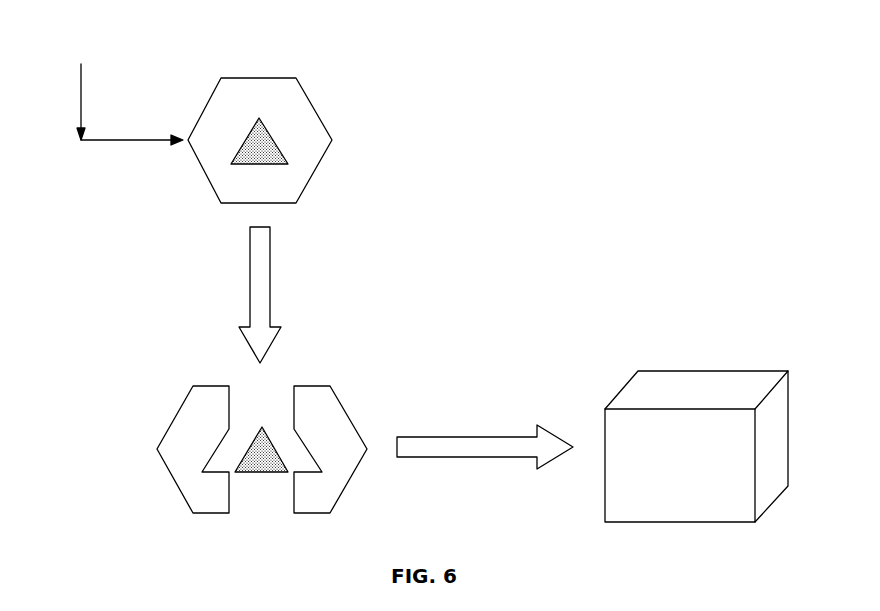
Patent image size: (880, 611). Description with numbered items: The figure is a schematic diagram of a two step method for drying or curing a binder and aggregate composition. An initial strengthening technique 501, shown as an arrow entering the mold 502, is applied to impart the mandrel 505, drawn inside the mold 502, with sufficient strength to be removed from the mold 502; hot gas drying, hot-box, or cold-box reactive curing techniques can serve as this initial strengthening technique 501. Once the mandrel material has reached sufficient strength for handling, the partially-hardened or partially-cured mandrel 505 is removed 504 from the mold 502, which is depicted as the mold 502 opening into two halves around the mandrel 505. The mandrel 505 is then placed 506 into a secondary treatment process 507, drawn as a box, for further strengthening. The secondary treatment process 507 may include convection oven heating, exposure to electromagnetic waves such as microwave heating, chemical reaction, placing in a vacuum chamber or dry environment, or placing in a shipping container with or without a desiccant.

The initial strengthening technique 501 is at (142, 146).
The mold 502 is at (288, 77).
The removal step 504 is at (250, 277).
The mandrel 505 is at (275, 140).
The placing step 506 is at (502, 436).
The secondary treatment process 507 is at (715, 368).